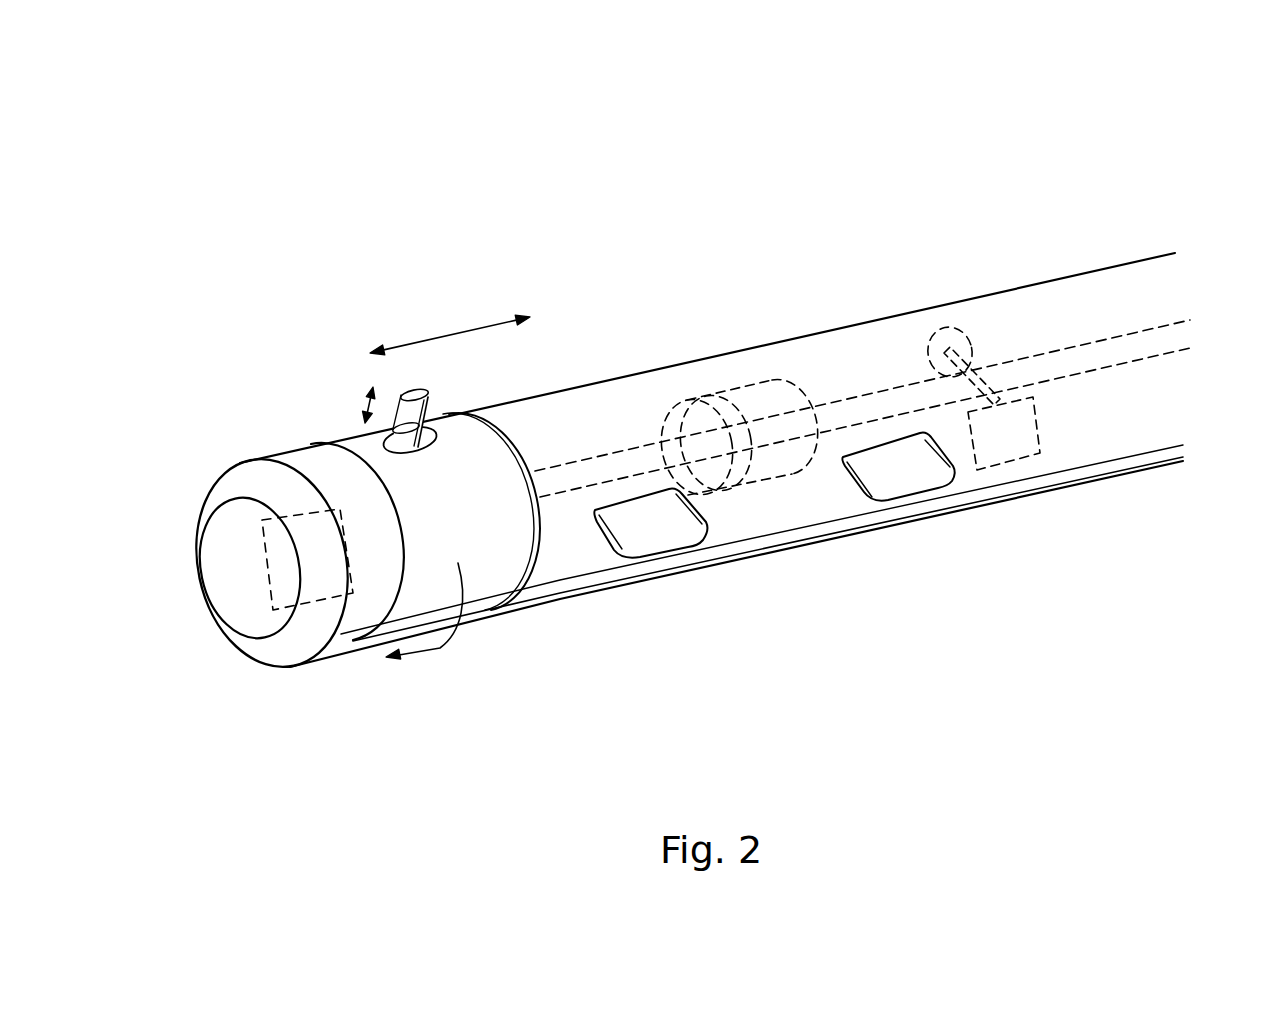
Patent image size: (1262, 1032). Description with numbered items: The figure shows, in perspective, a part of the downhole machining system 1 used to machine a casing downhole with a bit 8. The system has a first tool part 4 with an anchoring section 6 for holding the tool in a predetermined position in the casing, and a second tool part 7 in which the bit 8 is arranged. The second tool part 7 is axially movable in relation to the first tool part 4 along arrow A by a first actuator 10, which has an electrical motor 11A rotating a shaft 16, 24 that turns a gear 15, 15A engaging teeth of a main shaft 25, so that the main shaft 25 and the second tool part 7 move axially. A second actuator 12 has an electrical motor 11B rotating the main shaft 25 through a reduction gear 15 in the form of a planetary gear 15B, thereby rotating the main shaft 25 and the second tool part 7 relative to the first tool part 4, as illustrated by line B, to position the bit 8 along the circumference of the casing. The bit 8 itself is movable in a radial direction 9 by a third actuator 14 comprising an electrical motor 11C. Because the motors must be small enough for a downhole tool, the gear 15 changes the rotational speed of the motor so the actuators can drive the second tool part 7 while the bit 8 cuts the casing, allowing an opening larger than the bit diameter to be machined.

The downhole machining system 1 is at (392, 207).
The first tool part 4 is at (610, 393).
The anchoring section 6 is at (670, 542).
The second tool part 7 is at (338, 643).
The bit 8 is at (415, 394).
The direction 9 is at (366, 400).
The first actuator 10 is at (968, 283).
The electrical motor 11A is at (1012, 403).
The electrical motor 11B is at (748, 383).
The electrical motor 11C is at (262, 520).
The second actuator 12 is at (781, 380).
The third actuator 14 is at (290, 518).
The gear 15 is at (687, 400).
The gear 15A is at (925, 347).
The planetary gear 15B is at (712, 396).
The shaft 16 is at (968, 368).
The shaft 24 is at (970, 372).
The main shaft 25 is at (1083, 373).
The arrow A is at (462, 330).
The line B is at (436, 650).